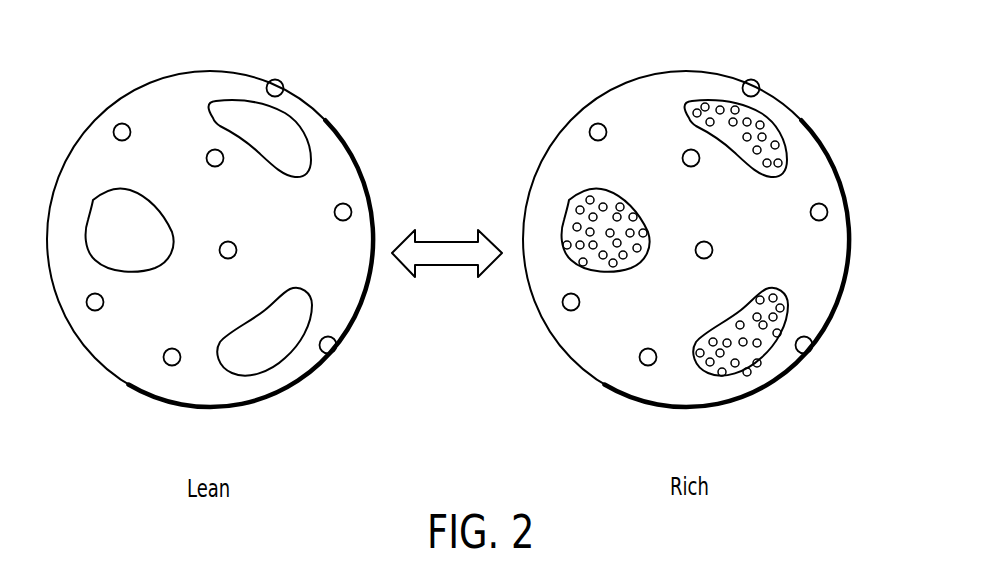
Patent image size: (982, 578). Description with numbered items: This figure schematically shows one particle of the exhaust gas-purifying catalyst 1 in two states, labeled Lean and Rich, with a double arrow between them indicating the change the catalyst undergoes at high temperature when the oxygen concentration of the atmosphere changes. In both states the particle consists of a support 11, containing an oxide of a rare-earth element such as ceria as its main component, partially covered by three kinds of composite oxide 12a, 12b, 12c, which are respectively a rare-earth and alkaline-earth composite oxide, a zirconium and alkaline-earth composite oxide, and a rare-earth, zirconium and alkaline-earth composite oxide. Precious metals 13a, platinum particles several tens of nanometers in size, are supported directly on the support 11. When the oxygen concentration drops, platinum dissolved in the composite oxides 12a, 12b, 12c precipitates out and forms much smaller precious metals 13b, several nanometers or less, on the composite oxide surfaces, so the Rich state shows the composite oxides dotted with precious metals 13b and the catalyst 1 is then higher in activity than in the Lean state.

The exhaust gas-purifying catalyst 1 is at (340, 124).
The support 11 is at (333, 317).
The composite oxide 12a is at (108, 206).
The composite oxide 12b is at (230, 108).
The composite oxide 12c is at (280, 350).
The precious metals 13a is at (165, 366).
The precious metals 13b is at (632, 233).